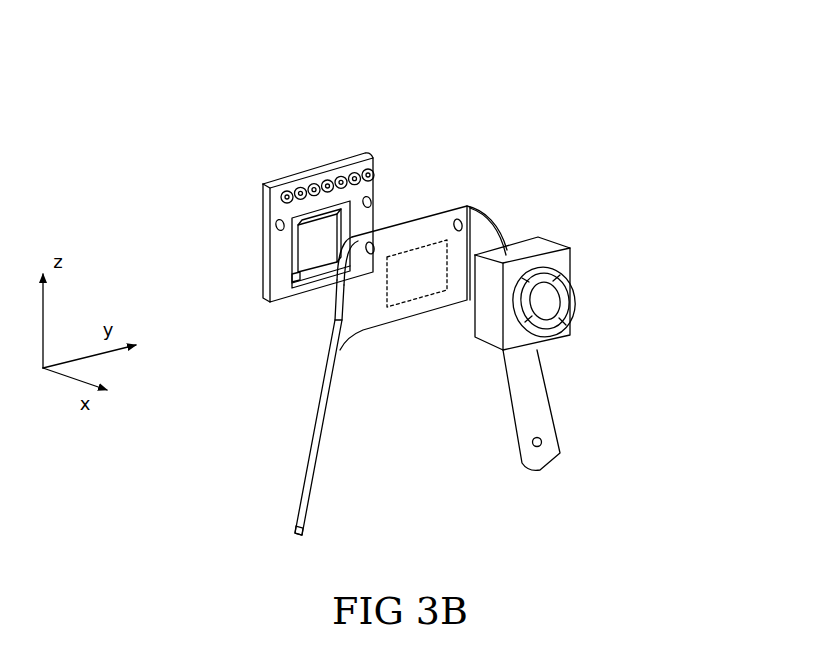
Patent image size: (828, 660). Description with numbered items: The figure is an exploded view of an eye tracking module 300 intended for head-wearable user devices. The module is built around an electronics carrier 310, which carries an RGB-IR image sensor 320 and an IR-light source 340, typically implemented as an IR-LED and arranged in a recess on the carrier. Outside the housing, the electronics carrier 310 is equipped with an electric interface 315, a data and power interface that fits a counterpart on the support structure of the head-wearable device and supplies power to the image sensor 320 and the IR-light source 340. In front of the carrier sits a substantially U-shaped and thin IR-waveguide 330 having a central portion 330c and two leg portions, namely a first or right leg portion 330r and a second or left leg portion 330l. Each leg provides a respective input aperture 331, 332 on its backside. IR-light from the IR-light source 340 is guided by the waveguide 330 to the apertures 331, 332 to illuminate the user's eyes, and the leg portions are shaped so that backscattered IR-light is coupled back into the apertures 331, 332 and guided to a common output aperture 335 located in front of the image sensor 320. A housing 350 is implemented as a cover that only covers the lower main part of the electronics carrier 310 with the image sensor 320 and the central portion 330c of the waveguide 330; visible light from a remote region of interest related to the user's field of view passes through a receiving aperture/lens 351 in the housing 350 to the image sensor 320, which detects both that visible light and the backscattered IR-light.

The eye tracking module 300 is at (362, 69).
The electronics carrier 310 is at (298, 161).
The electric interface 315 is at (384, 172).
The image sensor 320 is at (322, 272).
The IR-light source 340 is at (291, 272).
The IR-waveguide 330 is at (490, 204).
The central portion 330c is at (426, 334).
The right leg portion 330r is at (330, 475).
The left leg portion 330l is at (565, 387).
The input aperture 331 is at (294, 495).
The input aperture 332 is at (547, 454).
The common output aperture 335 is at (418, 239).
The housing 350 is at (553, 233).
The receiving aperture/lens 351 is at (575, 300).